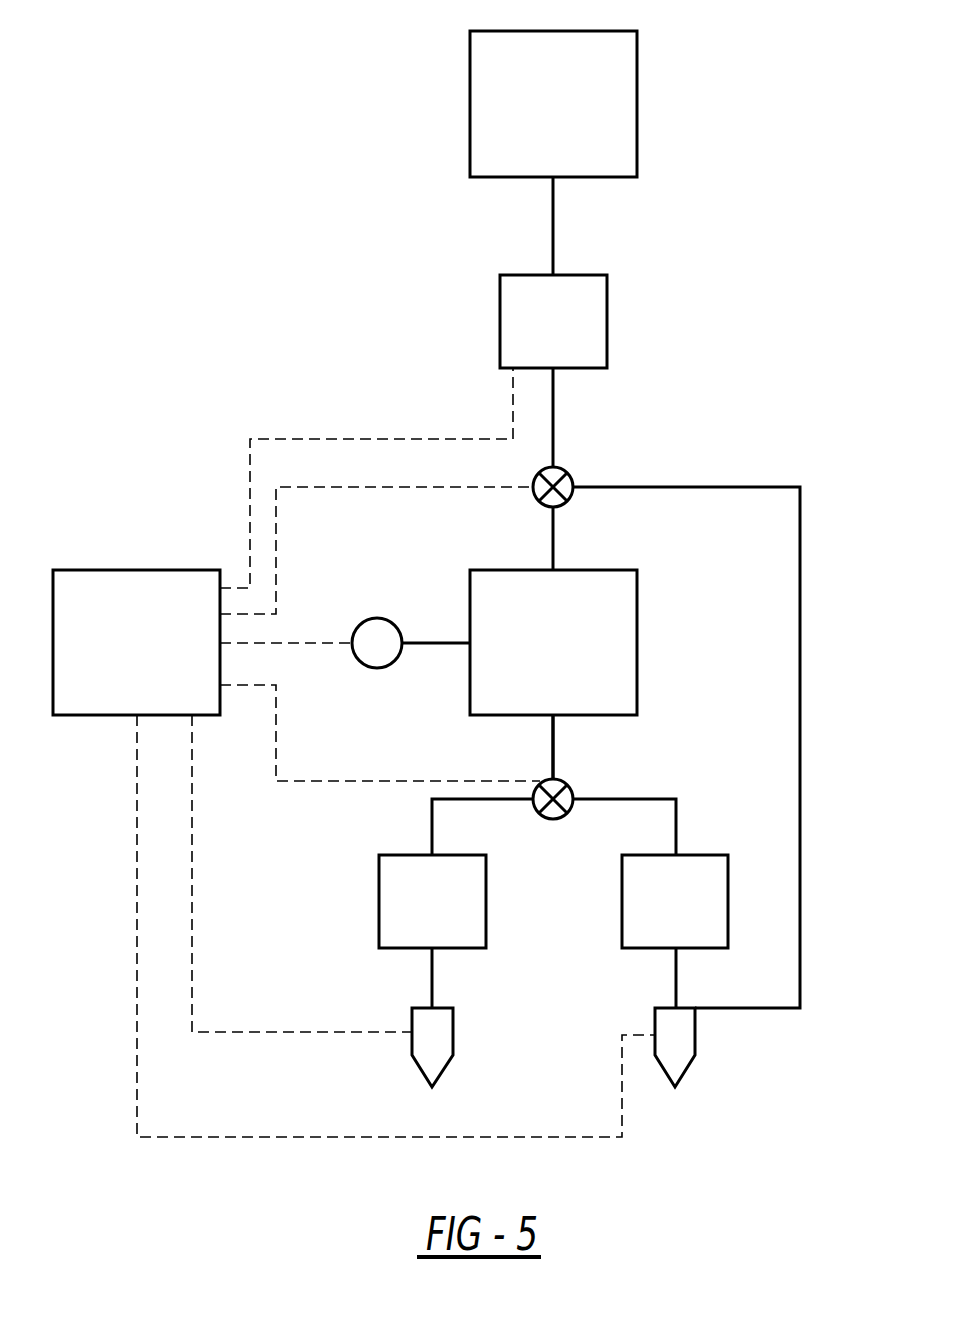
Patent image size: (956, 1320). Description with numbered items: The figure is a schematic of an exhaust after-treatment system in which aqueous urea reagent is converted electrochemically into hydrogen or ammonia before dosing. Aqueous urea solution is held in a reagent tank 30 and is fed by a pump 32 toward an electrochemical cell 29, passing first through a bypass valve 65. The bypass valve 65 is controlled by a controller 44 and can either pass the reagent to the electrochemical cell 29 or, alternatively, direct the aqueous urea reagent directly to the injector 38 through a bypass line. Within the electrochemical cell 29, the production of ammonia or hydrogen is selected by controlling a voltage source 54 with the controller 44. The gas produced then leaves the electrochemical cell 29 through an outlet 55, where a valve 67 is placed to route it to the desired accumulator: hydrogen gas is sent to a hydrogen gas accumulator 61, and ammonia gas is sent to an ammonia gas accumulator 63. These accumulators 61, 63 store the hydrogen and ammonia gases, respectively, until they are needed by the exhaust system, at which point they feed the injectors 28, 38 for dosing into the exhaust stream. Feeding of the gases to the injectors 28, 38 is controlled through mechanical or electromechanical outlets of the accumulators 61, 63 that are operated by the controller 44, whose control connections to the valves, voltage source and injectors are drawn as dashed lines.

The reagent tank 30 is at (534, 124).
The pump 32 is at (532, 334).
The bypass valve 65 is at (575, 475).
The electrochemical cell 29 is at (530, 660).
The controller 44 is at (112, 656).
The voltage source 54 is at (370, 618).
The outlet 55 is at (555, 745).
The valve 67 is at (558, 821).
The hydrogen gas accumulator 61 is at (412, 910).
The ammonia gas accumulator 63 is at (654, 910).
The injector 28 is at (455, 1038).
The injector 38 is at (697, 1038).